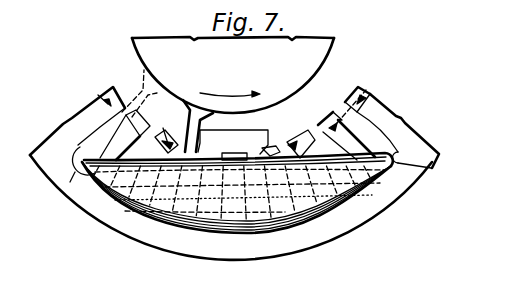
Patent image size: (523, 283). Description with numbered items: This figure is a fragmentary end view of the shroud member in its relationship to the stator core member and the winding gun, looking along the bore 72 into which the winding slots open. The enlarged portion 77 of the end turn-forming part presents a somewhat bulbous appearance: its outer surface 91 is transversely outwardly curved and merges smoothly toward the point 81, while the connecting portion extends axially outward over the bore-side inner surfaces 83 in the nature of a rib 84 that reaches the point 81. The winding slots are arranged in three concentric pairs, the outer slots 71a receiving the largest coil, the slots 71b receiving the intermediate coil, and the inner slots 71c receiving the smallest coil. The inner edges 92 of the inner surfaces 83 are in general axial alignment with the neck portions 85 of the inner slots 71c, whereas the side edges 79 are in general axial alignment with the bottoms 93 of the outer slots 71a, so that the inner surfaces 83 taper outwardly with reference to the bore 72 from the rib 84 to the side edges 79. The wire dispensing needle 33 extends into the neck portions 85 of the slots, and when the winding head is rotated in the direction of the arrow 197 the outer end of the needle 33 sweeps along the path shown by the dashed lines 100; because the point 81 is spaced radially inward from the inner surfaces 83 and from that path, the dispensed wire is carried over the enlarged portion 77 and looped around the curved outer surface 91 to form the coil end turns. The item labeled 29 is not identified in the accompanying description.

The rotary disc 29 is at (138, 53).
The arrow 197 is at (230, 87).
The wire dispensing needle 33 is at (184, 130).
The rib 84 is at (251, 130).
The point 81 is at (235, 153).
The inner edges 92 is at (278, 145).
The neck portions 85 is at (294, 146).
The bore 72 is at (347, 87).
The slots 71a is at (88, 150).
The side edges 79 is at (400, 168).
The inner surfaces 83 is at (113, 158).
The dashed lines 100 is at (155, 136).
The enlarged portion 77 is at (208, 238).
The outer surface 91 is at (287, 236).
The bottoms 93 is at (70, 182).
The slots 71b is at (110, 205).
The slots 71c is at (147, 223).